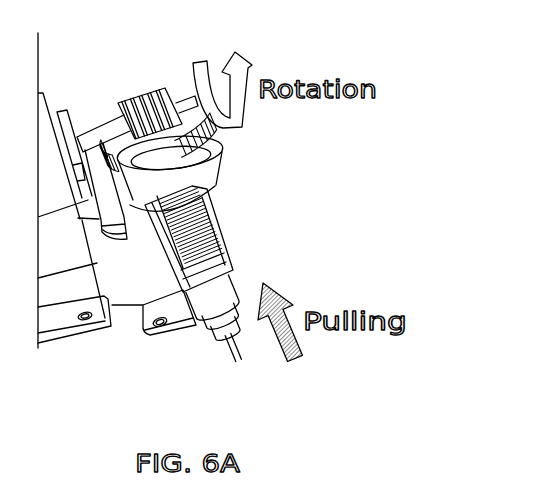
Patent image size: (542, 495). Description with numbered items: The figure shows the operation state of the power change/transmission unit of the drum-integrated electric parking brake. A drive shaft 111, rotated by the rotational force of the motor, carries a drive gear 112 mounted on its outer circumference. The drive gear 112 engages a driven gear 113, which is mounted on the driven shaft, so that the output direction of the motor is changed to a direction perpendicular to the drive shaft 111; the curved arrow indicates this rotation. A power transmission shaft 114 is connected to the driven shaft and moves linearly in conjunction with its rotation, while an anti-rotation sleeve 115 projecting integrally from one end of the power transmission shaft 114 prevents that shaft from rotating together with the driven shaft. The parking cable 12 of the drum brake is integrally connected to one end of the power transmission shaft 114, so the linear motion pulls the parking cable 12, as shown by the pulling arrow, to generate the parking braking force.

The drive shaft 111 is at (97, 133).
The drive gear 112 is at (143, 100).
The driven gear 113 is at (185, 157).
The power transmission shaft 114 is at (200, 224).
The anti-rotation sleeve 115 is at (185, 285).
The parking cable 12 is at (230, 358).